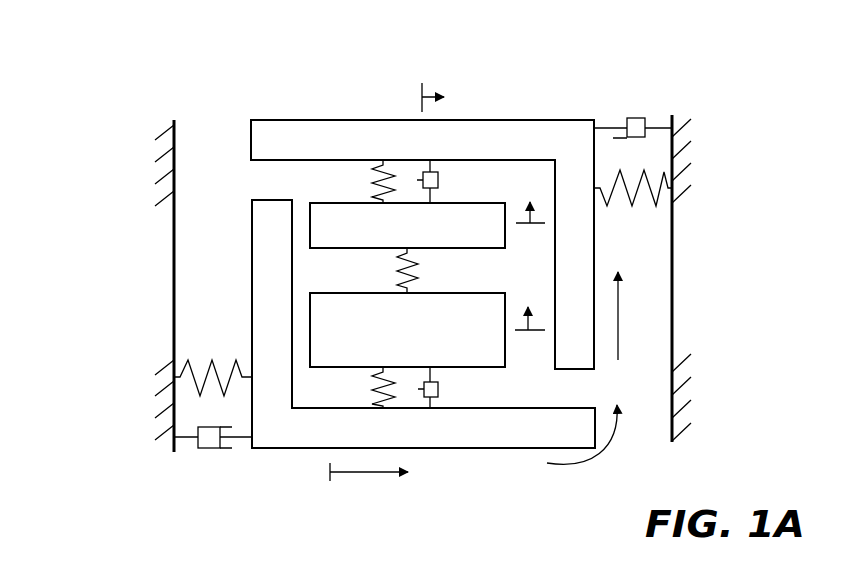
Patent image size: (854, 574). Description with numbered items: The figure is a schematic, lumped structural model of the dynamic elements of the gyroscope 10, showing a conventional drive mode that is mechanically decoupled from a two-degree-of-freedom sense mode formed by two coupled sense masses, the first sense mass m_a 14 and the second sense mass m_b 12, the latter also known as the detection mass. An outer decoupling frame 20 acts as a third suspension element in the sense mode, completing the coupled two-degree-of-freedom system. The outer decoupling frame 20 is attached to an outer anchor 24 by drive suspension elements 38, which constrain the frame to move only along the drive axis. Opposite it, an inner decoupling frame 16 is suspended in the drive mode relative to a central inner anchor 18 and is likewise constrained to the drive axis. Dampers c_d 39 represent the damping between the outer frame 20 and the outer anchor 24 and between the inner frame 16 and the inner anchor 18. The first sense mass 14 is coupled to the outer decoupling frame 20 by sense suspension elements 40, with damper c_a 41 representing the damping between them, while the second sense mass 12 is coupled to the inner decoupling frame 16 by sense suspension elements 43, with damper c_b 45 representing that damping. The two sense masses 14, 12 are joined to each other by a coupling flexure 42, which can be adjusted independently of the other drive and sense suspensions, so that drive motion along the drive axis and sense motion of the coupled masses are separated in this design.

The gyroscope 10 is at (240, 80).
The sense mass m_b 12 is at (322, 203).
The sense mass m_a 14 is at (310, 295).
The inner decoupling frame 16 is at (378, 122).
The inner anchor 18 is at (672, 355).
The outer decoupling frame 20 is at (515, 448).
The outer anchor 24 is at (170, 368).
The drive suspension elements 38 is at (633, 177).
The dampers c_d 39 is at (618, 122).
The sense suspension elements 40 is at (402, 383).
The damper c_a 41 is at (437, 397).
The coupling flexure 42 is at (427, 270).
The sense suspension elements 43 is at (372, 175).
The damper c_b 45 is at (438, 176).